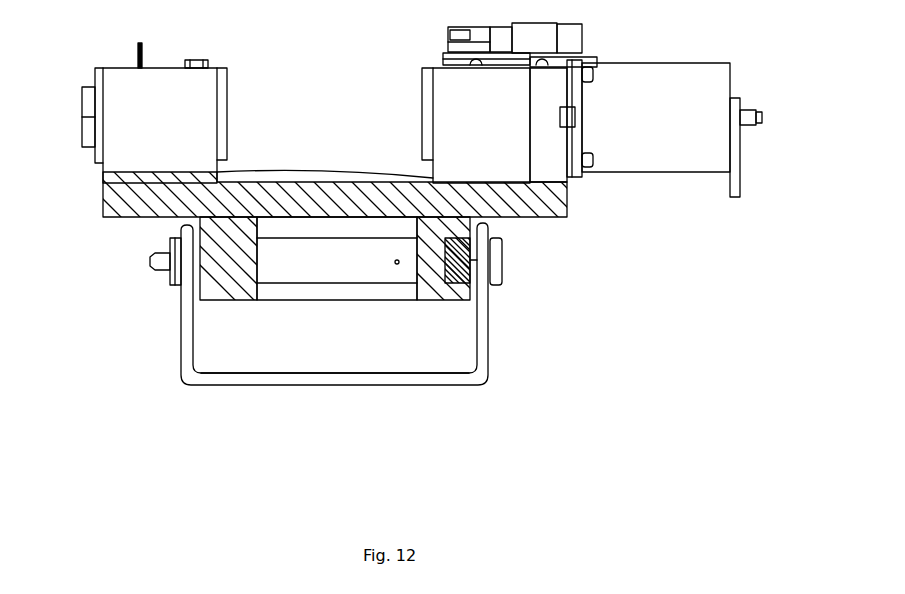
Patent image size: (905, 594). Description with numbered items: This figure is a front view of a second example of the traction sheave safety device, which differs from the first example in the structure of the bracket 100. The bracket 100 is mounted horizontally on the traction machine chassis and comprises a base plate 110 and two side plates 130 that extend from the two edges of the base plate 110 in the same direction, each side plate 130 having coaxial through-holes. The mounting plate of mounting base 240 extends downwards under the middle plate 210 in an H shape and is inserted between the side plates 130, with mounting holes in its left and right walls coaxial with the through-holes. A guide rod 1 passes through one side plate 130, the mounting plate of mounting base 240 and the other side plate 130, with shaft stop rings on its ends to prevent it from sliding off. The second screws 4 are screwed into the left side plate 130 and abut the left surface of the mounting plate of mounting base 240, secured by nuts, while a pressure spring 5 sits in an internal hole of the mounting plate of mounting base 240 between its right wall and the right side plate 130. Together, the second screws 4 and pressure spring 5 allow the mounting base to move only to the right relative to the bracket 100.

The guide rod 1 is at (412, 361).
The second screws 4 is at (109, 319).
The pressure spring 5 is at (567, 328).
The bracket 100 is at (334, 364).
The base plate 110 is at (335, 439).
The side plates 130 is at (534, 371).
The middle plate 210 is at (361, 200).
The mounting plate of mounting base 240 is at (180, 361).